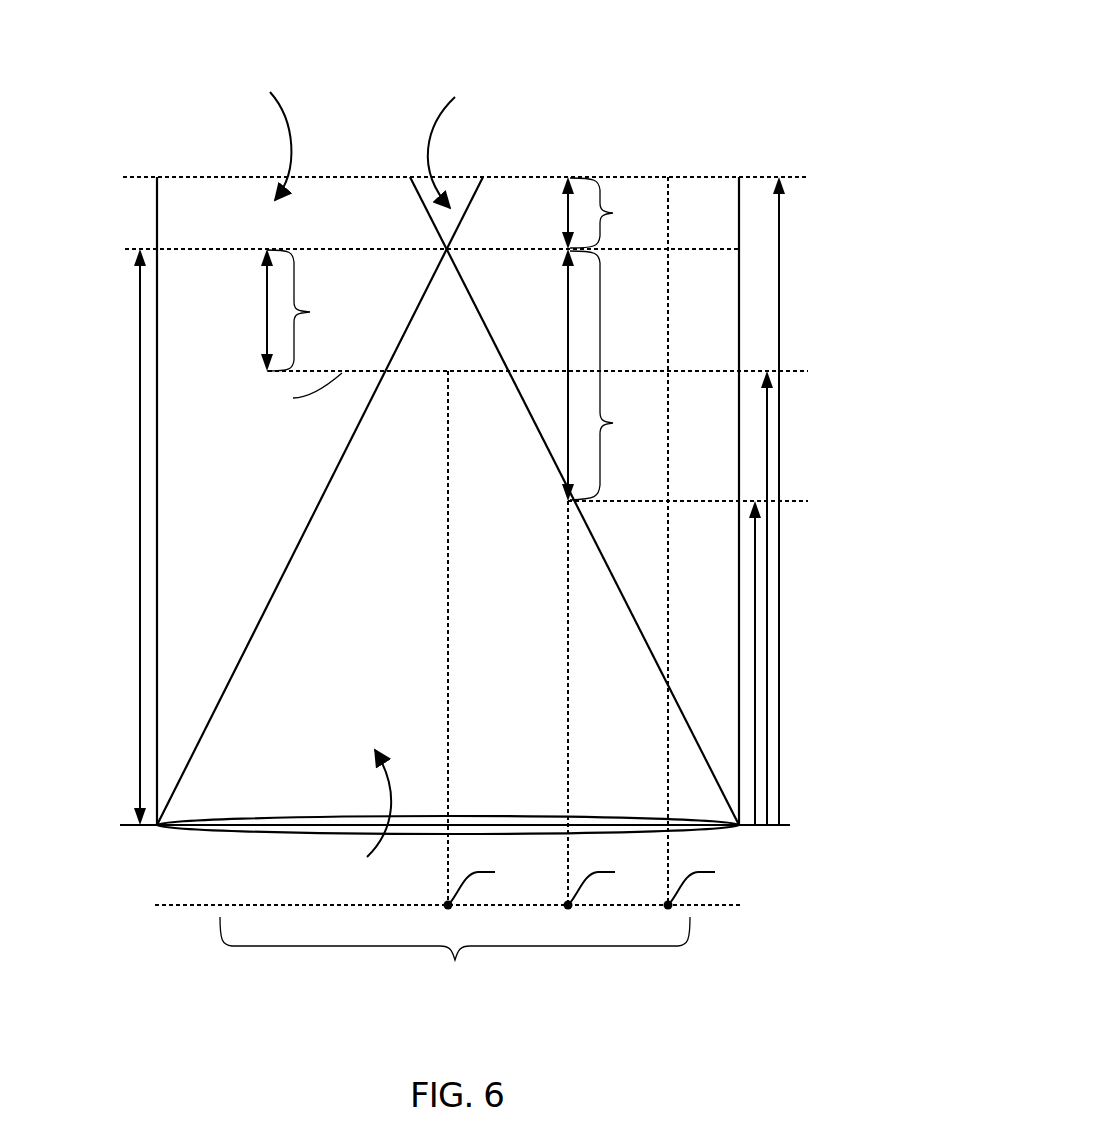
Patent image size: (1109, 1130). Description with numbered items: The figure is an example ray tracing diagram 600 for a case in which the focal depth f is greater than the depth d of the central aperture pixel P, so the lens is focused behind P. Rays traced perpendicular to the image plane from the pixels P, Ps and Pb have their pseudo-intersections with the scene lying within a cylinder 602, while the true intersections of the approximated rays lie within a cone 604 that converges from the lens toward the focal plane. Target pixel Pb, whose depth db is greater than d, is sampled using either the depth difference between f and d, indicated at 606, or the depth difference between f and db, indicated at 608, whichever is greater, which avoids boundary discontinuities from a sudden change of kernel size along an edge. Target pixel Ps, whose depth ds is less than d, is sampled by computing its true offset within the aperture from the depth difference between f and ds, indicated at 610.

The ray tracing diagram 600 is at (675, 60).
The cylinder 602 is at (155, 220).
The cone 604 is at (480, 318).
The depth difference between f and d 606 is at (263, 338).
The depth difference between f and db 608 is at (567, 213).
The depth difference between f and ds 610 is at (567, 320).